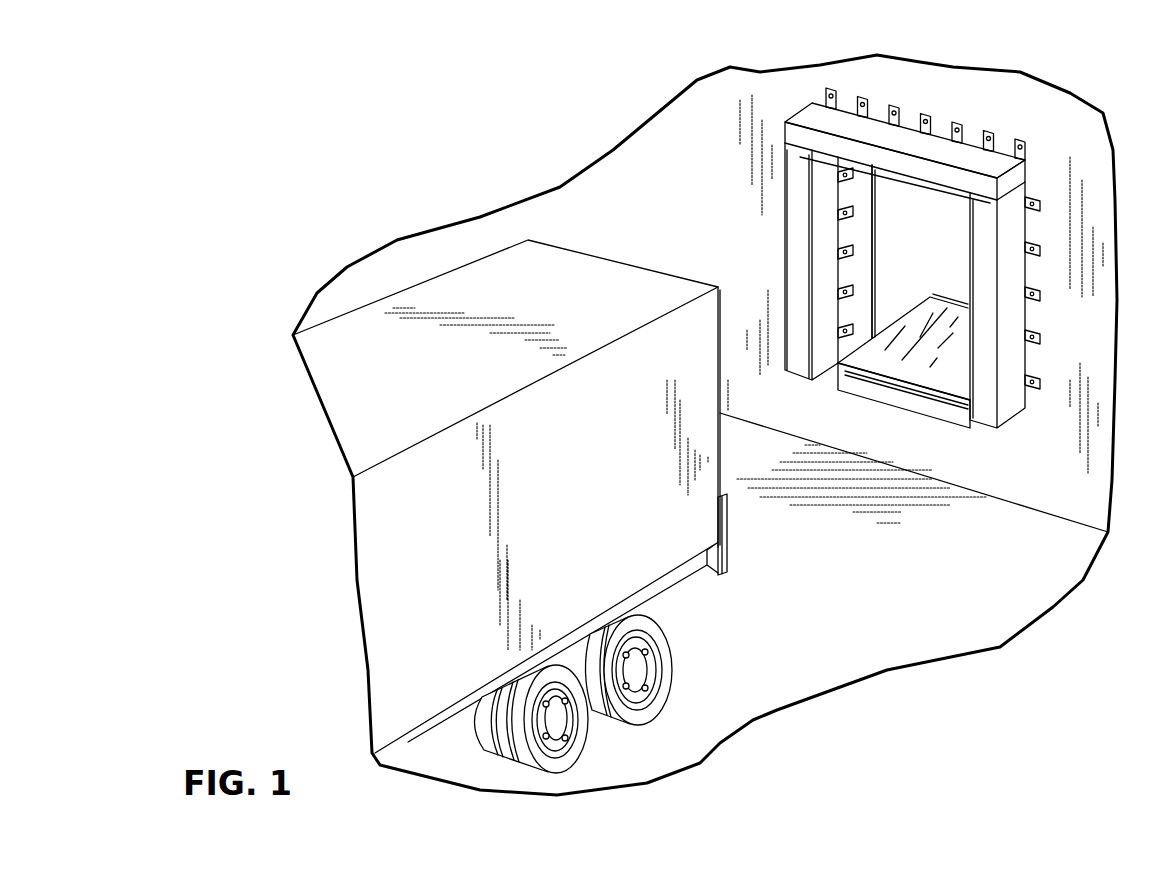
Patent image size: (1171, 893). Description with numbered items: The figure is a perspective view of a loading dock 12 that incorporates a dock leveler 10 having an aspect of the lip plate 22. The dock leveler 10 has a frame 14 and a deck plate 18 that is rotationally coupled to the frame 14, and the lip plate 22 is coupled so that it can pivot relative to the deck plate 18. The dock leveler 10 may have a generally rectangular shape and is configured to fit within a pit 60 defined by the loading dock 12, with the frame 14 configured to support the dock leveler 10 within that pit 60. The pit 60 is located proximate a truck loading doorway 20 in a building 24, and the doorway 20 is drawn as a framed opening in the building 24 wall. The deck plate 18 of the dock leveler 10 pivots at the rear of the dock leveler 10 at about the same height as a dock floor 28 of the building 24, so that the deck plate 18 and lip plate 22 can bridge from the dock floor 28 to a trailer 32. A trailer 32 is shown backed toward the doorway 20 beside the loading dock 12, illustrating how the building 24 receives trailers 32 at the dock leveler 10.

The dock leveler 10 is at (923, 423).
The loading dock 12 is at (825, 397).
The frame 14 is at (958, 297).
The deck plate 18 is at (933, 352).
The truck loading doorway 20 is at (913, 100).
The lip plate 22 is at (957, 412).
The building 24 is at (975, 62).
The dock floor 28 is at (938, 275).
The trailer 32 is at (487, 290).
The pit 60 is at (913, 293).